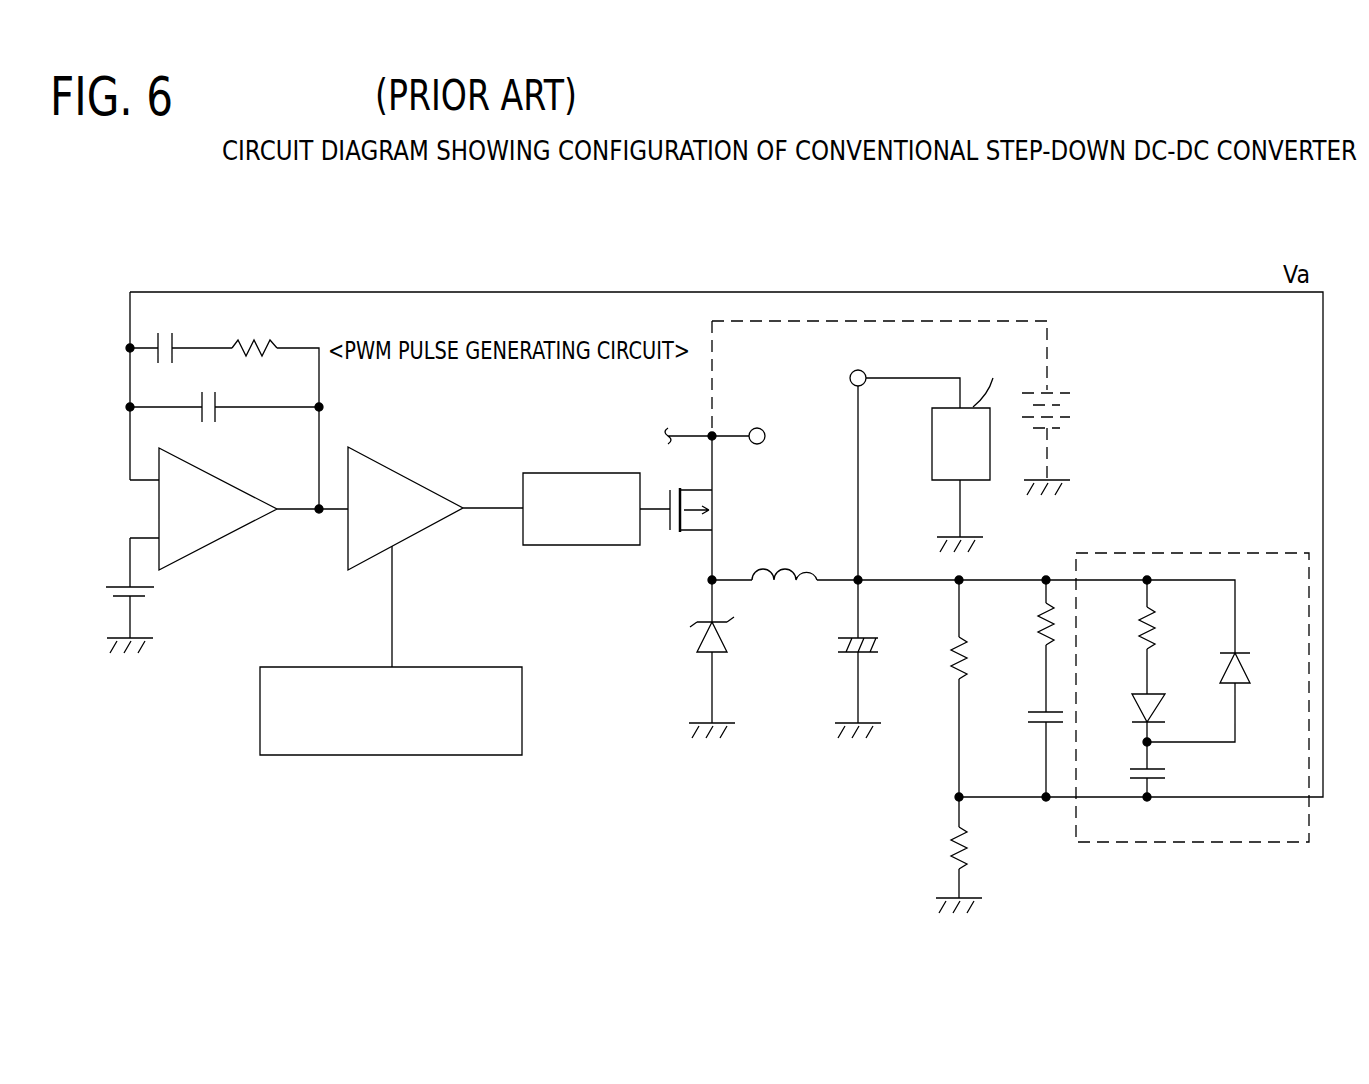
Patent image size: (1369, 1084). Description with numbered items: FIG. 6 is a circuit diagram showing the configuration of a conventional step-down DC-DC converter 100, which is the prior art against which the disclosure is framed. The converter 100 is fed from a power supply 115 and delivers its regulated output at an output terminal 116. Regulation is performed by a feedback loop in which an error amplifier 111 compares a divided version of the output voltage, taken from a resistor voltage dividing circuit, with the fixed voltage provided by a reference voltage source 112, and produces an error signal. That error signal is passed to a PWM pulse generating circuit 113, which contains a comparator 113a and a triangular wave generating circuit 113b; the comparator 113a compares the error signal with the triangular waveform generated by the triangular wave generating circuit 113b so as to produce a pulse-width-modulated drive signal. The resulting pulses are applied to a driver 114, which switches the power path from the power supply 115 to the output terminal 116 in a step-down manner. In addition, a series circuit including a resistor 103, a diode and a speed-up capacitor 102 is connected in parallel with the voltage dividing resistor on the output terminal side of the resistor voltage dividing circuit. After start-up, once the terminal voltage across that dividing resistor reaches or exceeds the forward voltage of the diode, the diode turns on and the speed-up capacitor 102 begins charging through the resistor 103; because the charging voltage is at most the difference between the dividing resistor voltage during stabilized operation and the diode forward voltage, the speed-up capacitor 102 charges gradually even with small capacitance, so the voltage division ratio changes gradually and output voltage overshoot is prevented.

The step-down DC-DC converter 100 is at (564, 275).
The speed-up capacitor 102 is at (928, 738).
The resistor 103 is at (1243, 553).
The error amplifier 111 is at (235, 533).
The reference voltage source 112 is at (110, 585).
The PWM pulse generating circuit 113 is at (391, 615).
The comparator 113a is at (427, 530).
The triangular wave generating circuit 113b is at (442, 757).
The driver 114 is at (547, 472).
The power supply 115 is at (744, 411).
The output terminal 116 is at (866, 370).